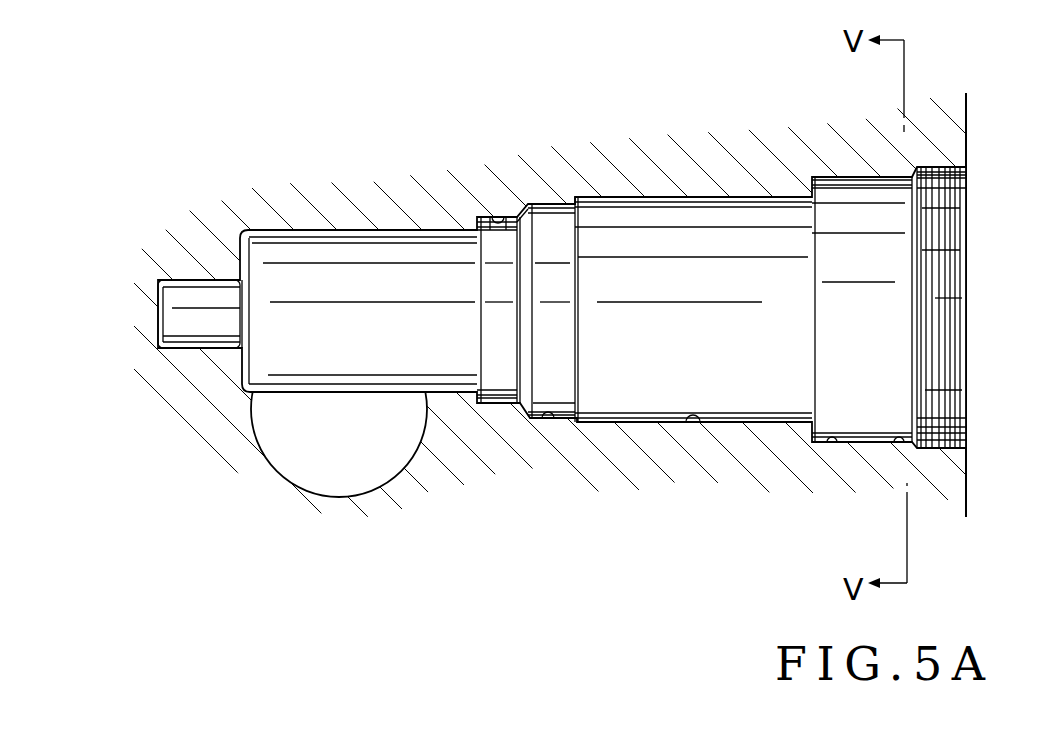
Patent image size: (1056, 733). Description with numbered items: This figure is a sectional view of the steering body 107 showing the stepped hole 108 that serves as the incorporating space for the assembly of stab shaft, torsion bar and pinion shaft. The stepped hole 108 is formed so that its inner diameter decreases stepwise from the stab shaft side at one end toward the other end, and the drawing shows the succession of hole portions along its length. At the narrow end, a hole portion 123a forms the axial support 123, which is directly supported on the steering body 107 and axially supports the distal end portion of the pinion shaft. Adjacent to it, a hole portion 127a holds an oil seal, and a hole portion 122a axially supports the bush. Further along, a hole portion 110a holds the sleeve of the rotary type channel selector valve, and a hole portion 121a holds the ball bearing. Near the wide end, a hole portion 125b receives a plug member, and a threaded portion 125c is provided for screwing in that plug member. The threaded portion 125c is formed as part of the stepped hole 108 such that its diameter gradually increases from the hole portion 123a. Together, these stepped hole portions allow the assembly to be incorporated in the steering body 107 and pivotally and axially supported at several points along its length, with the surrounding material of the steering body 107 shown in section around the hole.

The steering body 107 is at (557, 172).
The stepped hole 108 is at (379, 262).
The hole portion 110a is at (696, 424).
The hole portion 121a is at (837, 442).
The hole portion 122a is at (553, 411).
The axial support 123 is at (191, 268).
The hole portion 123a is at (190, 349).
The hole portion of plug member 125b is at (897, 442).
The threaded portion 125c is at (941, 166).
The hole portion 127a is at (492, 214).